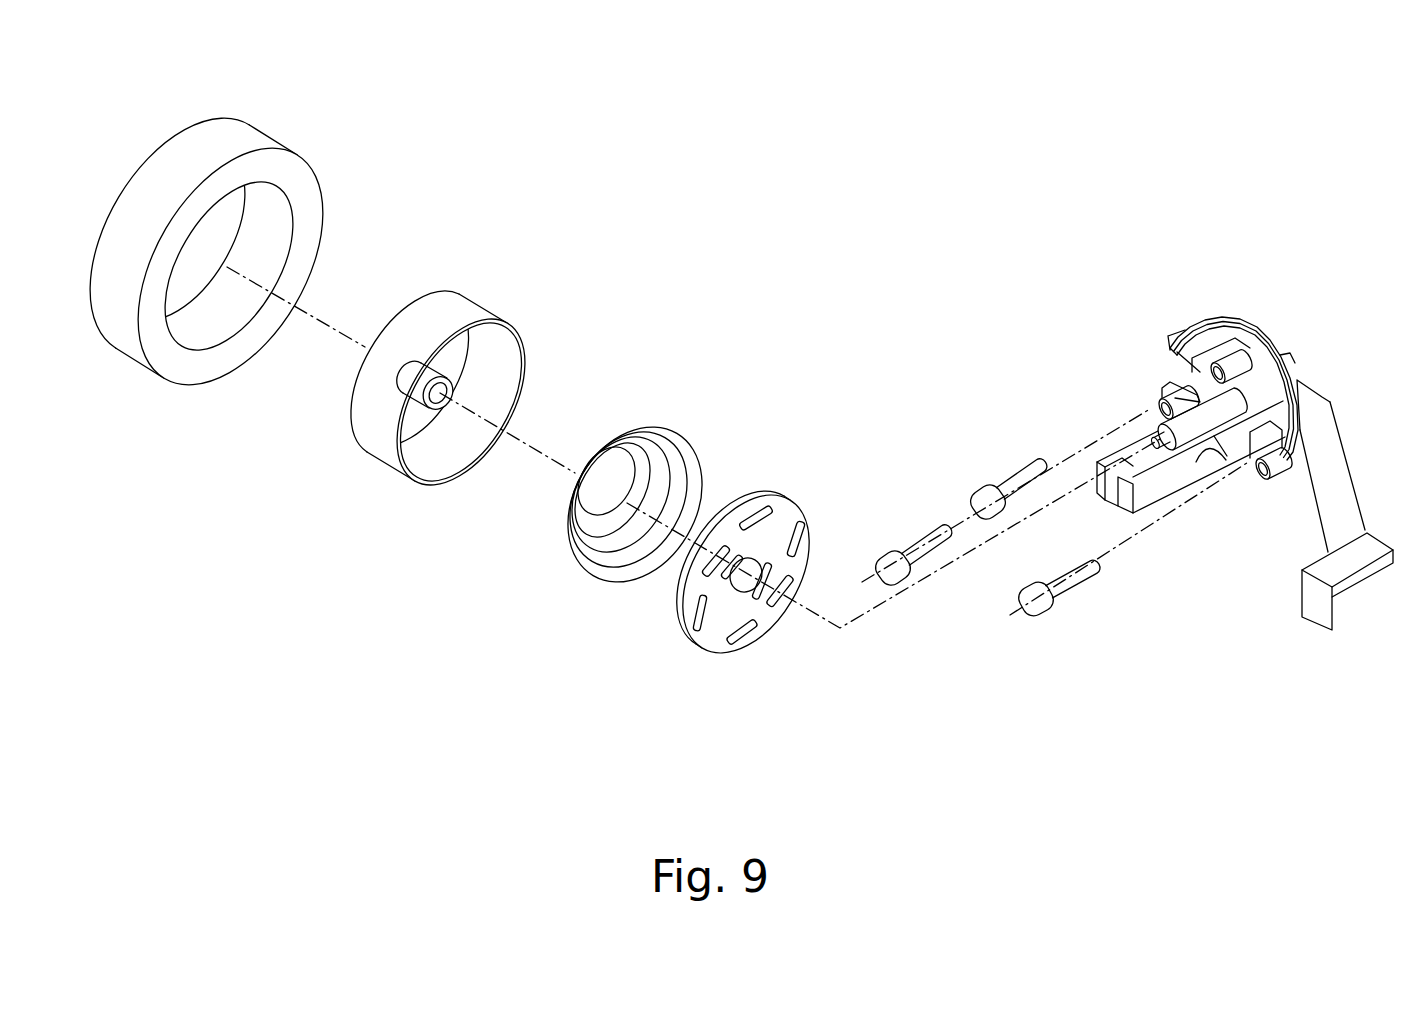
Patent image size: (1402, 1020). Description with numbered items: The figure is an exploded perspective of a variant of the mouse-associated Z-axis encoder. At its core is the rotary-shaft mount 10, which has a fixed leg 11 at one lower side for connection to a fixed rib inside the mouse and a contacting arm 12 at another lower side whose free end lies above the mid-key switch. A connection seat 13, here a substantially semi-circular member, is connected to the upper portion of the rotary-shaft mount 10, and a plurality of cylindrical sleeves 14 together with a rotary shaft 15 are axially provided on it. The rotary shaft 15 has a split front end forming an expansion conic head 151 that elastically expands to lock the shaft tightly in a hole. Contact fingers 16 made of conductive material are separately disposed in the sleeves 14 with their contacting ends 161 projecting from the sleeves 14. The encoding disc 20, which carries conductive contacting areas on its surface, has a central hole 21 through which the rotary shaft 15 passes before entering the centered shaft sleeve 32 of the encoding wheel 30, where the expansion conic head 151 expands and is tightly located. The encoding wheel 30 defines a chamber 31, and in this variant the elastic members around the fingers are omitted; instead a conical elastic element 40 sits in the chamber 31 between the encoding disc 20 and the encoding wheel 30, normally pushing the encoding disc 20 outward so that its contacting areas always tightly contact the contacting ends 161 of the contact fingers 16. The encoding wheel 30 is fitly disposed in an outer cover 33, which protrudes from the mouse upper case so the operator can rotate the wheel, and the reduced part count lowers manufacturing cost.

The rotary-shaft mount 10 is at (1243, 451).
The fixed leg 11 is at (1142, 480).
The contacting arm 12 is at (1342, 563).
The connection seat 13 is at (1248, 390).
The cylindrical sleeves 14 is at (1160, 397).
The rotary shaft 15 is at (1170, 487).
The expansion conic head 151 is at (1166, 432).
The contact fingers 16 is at (989, 526).
The contacting ends 161 is at (893, 567).
The encoding disc 20 is at (746, 579).
The central hole 21 is at (743, 583).
The encoding wheel 30 is at (468, 341).
The chamber 31 is at (489, 385).
The shaft sleeve 32 is at (431, 372).
The outer cover 33 is at (234, 145).
The conical elastic element 40 is at (627, 433).